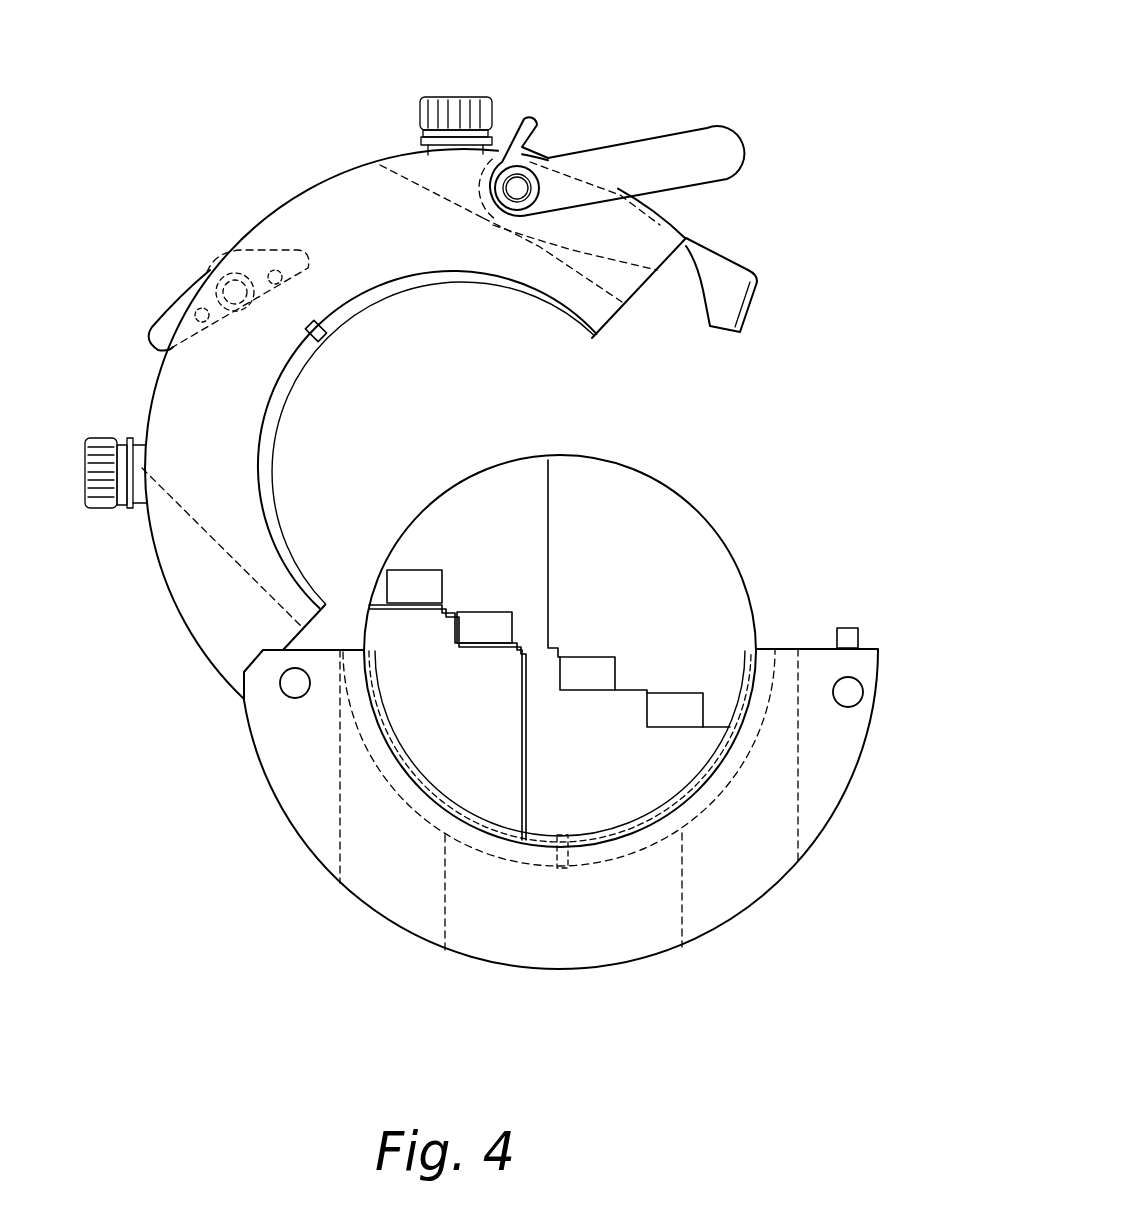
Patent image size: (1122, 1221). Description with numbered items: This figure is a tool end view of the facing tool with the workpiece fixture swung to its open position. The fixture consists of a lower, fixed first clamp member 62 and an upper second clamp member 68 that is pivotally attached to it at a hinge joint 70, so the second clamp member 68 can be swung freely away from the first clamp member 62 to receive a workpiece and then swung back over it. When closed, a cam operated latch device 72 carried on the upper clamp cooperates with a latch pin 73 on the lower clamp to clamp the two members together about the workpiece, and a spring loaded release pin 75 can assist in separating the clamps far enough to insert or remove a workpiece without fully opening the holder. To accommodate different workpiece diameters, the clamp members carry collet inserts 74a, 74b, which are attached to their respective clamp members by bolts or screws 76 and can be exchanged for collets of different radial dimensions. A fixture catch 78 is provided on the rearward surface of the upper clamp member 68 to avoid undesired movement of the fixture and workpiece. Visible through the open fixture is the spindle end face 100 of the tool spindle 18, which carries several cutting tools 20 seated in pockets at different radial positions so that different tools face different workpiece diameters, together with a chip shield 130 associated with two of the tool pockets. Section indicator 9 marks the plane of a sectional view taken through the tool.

The section line 9- 9 is at (555, 105).
The tool spindle 18 is at (742, 528).
The cutting tool 20 is at (410, 580).
The first clamp member 62 is at (400, 927).
The second clamp member 68 is at (322, 172).
The hinge joint 70 is at (278, 702).
The cam operated latch device 72 is at (642, 120).
The latch pin 73 is at (852, 697).
The collet insert 74a is at (340, 333).
The collet insert 74b is at (455, 797).
The spring loaded release pin 75 is at (850, 640).
The bolts or screws 76 is at (320, 318).
The fixture catch 78 is at (190, 268).
The spindle end face 100 is at (617, 510).
The chip shield 130 is at (489, 707).